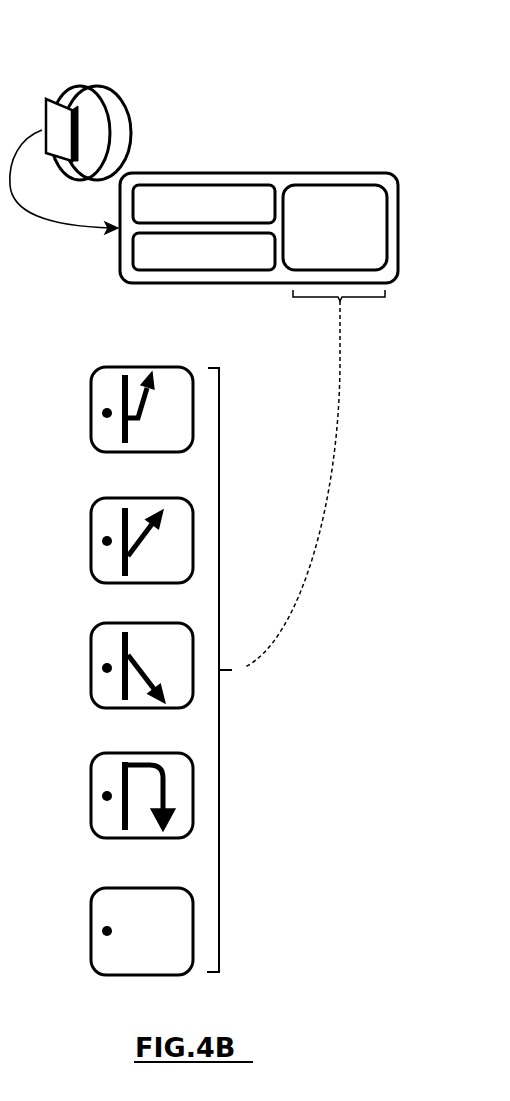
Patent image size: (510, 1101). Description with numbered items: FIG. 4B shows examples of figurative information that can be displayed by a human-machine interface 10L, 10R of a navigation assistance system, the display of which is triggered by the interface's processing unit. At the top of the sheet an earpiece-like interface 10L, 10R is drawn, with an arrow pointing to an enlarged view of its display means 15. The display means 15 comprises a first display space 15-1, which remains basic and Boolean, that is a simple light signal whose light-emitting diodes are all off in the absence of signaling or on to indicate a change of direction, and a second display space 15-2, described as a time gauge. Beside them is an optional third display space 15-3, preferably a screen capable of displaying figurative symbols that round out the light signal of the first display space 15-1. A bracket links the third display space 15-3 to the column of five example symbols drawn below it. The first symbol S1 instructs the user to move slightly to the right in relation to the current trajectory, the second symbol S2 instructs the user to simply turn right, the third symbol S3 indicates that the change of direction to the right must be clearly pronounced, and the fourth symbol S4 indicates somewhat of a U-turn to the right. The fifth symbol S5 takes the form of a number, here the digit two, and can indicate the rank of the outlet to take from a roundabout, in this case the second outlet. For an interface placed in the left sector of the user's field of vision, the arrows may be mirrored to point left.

The human-machine interface 10L is at (122, 120).
The human-machine interface 10R is at (112, 92).
The display means 15 is at (318, 173).
The first display space 15-1 is at (204, 204).
The second display space 15-2 is at (204, 251).
The third display space 15-3 is at (297, 578).
The symbol S1 is at (103, 415).
The symbol S2 is at (103, 543).
The symbol S3 is at (103, 670).
The symbol S4 is at (103, 798).
The symbol S5 is at (103, 933).